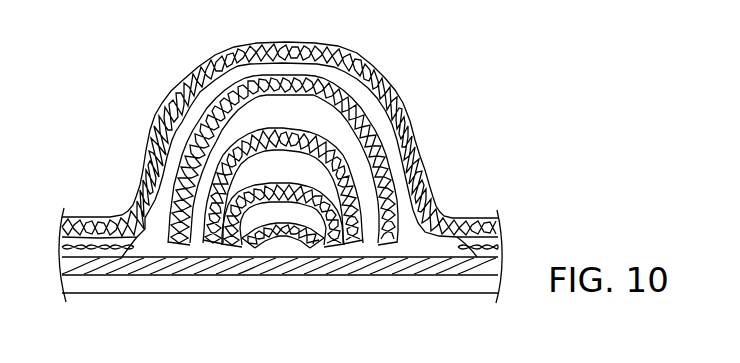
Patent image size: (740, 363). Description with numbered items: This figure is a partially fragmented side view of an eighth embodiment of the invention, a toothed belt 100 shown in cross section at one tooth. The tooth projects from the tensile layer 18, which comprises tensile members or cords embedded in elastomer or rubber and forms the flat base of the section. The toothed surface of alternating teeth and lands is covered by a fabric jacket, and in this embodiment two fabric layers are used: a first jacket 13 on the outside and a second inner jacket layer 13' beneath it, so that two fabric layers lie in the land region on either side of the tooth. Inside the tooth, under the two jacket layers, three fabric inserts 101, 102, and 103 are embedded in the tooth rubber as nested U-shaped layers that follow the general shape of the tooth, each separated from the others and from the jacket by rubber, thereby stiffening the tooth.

The belt 100 is at (134, 74).
The jacket 13 is at (284, 149).
The second inner jacket layer 13' is at (333, 160).
The tensile layer 18 is at (130, 263).
The insert 101 is at (380, 240).
The insert 102 is at (342, 232).
The insert 103 is at (258, 246).